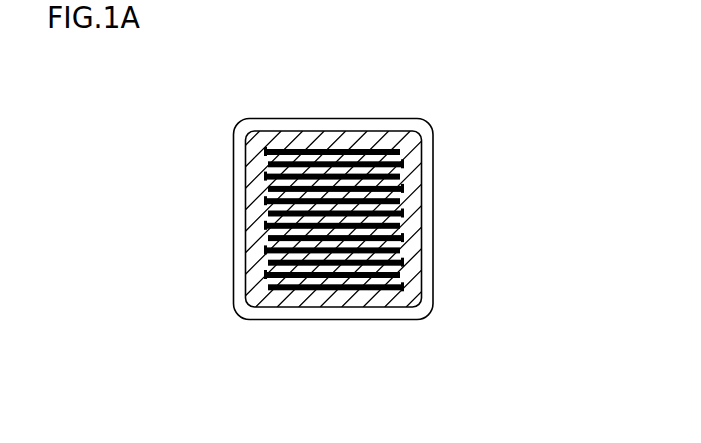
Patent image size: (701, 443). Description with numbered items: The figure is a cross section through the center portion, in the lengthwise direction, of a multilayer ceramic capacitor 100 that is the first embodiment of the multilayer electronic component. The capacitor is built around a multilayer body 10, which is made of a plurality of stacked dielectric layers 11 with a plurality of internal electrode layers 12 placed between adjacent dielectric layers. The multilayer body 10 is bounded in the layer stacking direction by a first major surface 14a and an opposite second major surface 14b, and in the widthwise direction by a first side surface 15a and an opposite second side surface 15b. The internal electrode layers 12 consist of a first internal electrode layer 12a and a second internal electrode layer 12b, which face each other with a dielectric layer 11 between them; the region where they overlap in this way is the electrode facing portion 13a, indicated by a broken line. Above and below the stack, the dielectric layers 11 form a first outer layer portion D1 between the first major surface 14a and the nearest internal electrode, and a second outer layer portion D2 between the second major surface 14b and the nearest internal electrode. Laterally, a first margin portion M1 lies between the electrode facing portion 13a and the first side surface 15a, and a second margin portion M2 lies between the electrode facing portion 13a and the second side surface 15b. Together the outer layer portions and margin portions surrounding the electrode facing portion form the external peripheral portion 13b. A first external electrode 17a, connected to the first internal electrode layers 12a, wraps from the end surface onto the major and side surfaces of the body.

The multilayer ceramic capacitor 100 is at (592, 58).
The multilayer body 10 is at (341, 136).
The dielectric layers 11 is at (360, 152).
The internal electrode layers 12 is at (222, 81).
The first internal electrode layer 12a is at (312, 148).
The second internal electrode layer 12b is at (279, 160).
The electrode facing portion 13a is at (405, 166).
The external peripheral portion 13b is at (403, 264).
The first major surface 14a is at (403, 160).
The second major surface 14b is at (402, 313).
The first side surface 15a is at (244, 213).
The second side surface 15b is at (423, 215).
The first external electrode 17a is at (242, 145).
The first outer layer portion D1 is at (329, 138).
The second outer layer portion D2 is at (316, 301).
The first margin portion M1 is at (263, 261).
The second margin portion M2 is at (403, 243).